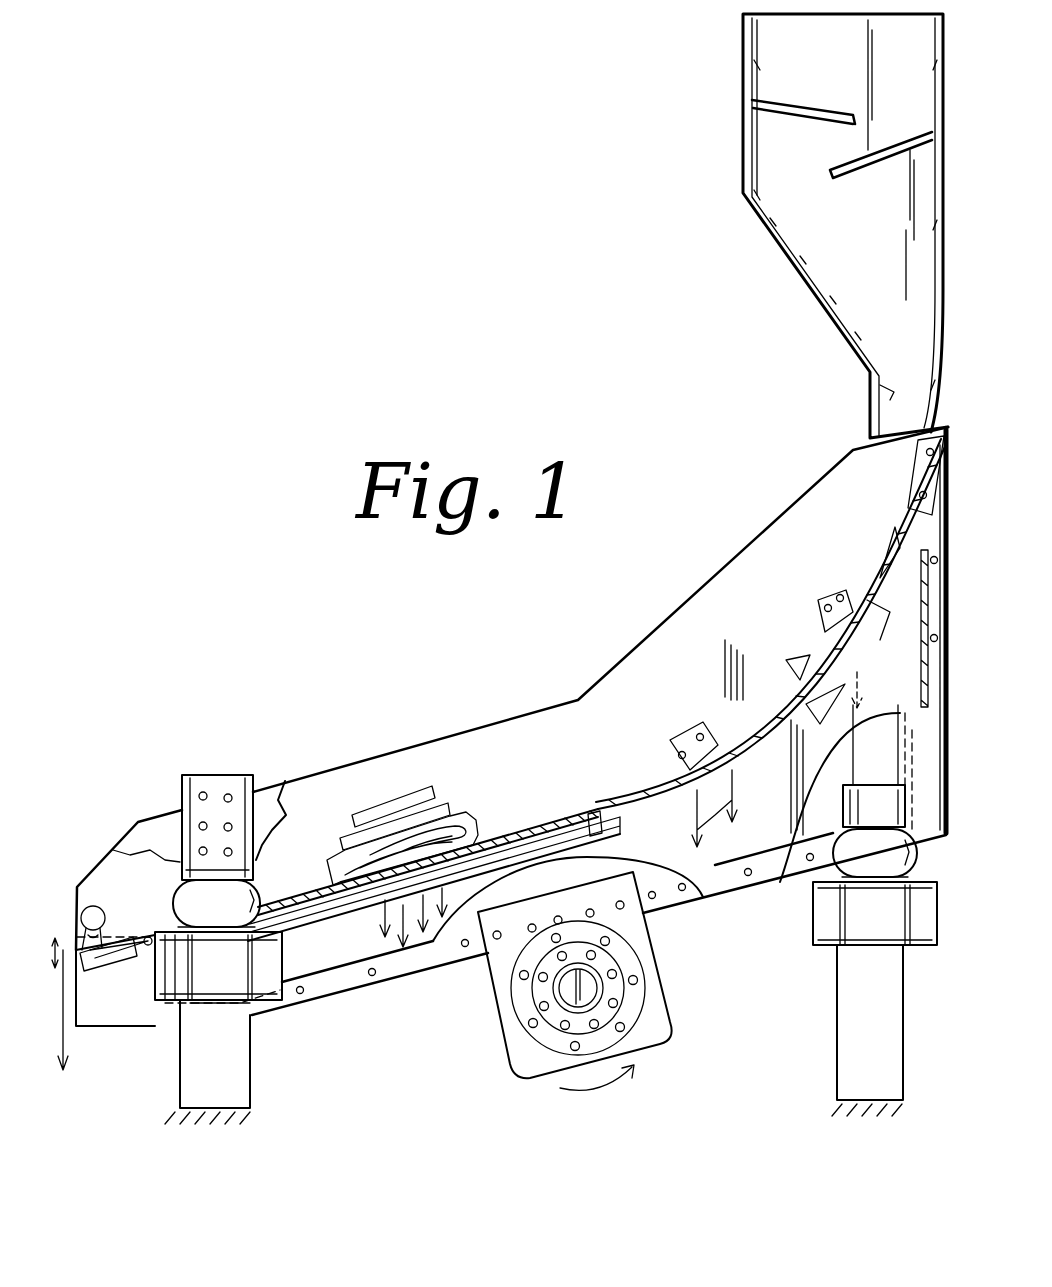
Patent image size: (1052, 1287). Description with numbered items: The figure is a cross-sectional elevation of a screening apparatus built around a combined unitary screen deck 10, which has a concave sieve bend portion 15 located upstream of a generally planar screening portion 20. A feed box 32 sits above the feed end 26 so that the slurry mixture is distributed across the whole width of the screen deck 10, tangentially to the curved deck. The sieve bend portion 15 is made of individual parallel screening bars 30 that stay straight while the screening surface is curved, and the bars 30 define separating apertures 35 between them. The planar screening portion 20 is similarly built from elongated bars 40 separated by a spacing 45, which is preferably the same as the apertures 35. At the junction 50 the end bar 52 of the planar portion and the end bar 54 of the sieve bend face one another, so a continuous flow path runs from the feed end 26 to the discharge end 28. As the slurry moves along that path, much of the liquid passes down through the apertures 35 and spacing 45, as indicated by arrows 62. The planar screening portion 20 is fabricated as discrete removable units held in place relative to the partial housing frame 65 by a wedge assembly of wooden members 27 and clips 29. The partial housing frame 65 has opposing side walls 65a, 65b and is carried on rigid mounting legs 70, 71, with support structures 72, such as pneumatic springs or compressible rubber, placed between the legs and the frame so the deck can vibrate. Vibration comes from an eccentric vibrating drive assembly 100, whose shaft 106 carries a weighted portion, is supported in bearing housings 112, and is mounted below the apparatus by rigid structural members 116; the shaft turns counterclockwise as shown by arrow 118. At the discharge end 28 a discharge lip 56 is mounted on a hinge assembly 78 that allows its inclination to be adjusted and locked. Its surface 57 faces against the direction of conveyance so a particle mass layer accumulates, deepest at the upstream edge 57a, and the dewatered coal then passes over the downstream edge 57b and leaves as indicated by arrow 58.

The screen deck 10 is at (478, 300).
The feed box 32 is at (743, 135).
The feed end 26 is at (886, 502).
The sieve bend portion 15 is at (752, 712).
The screening bars 30 is at (893, 560).
The separating apertures 35 is at (878, 640).
The partial housing frame 65 is at (589, 682).
The side wall 65a is at (688, 670).
The side wall 65b is at (285, 780).
The arrows 62 is at (376, 930).
The rigid mounting leg 71 is at (206, 782).
The support structures 72 is at (182, 866).
The rigid mounting leg 70 is at (250, 1097).
The screening bars 40 is at (530, 838).
The spacing 45 is at (352, 905).
The planar screening portion 20 is at (508, 818).
The wooden members 27 is at (466, 818).
The clips 29 is at (356, 838).
The junction 50 is at (604, 812).
The bar 54 is at (612, 835).
The bar 52 is at (555, 924).
The vibrating drive assembly 100 is at (486, 1074).
The shaft 106 is at (596, 990).
The bearing housings 112 is at (540, 988).
The rigid structural members 116 is at (660, 1025).
The arrow 118 is at (612, 1096).
The discharge lip 56 is at (100, 955).
The hinge assembly 78 is at (146, 948).
The surface 57 is at (82, 940).
The upstream edge 57a is at (140, 937).
The downstream edge 57b is at (70, 950).
The discharge end 28 is at (150, 920).
The arrow 58 is at (64, 1040).